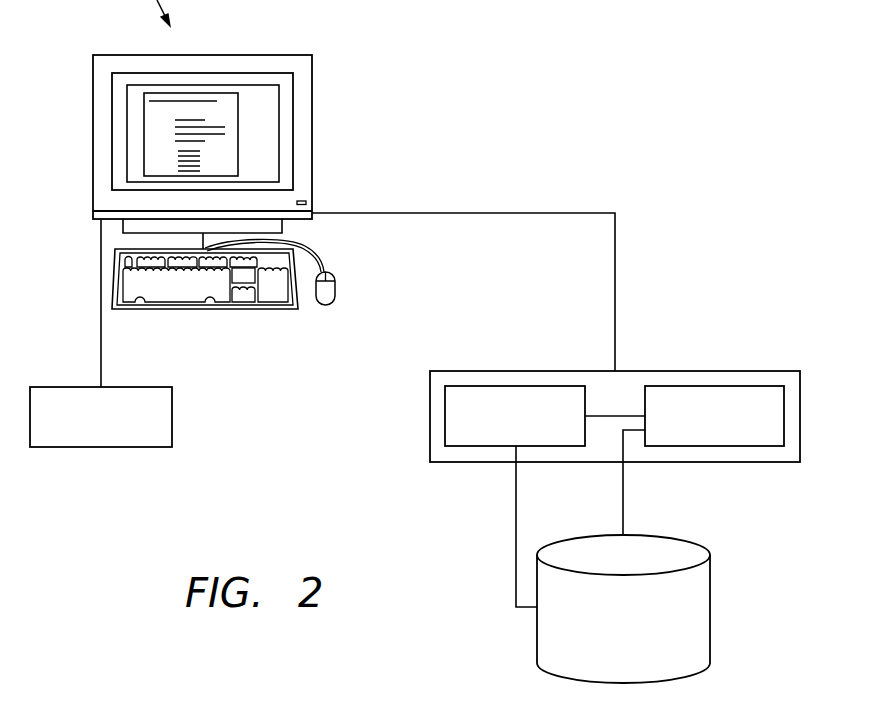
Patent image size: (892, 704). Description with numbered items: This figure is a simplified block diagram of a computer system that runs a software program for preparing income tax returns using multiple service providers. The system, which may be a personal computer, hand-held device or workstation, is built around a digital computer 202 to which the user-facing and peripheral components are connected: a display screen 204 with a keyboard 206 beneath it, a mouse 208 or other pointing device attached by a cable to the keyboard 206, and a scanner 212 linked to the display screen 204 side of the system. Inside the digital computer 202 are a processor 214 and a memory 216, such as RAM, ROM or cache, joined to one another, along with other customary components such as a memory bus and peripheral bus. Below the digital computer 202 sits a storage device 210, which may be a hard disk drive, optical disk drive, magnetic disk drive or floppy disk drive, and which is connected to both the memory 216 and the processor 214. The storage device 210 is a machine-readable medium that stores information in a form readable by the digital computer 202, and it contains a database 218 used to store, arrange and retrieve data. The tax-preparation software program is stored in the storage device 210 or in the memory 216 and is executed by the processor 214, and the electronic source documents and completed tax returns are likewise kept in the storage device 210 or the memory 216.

The digital computer 202 is at (658, 371).
The display screen 204 is at (150, 138).
The keyboard 206 is at (204, 309).
The mouse 208 is at (327, 288).
The storage device 210 is at (710, 615).
The scanner 212 is at (172, 415).
The processor 214 is at (737, 386).
The memory 216 is at (515, 386).
The database 218 is at (683, 550).